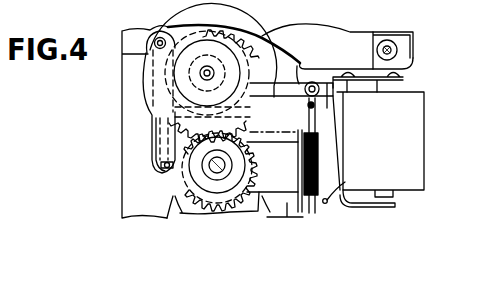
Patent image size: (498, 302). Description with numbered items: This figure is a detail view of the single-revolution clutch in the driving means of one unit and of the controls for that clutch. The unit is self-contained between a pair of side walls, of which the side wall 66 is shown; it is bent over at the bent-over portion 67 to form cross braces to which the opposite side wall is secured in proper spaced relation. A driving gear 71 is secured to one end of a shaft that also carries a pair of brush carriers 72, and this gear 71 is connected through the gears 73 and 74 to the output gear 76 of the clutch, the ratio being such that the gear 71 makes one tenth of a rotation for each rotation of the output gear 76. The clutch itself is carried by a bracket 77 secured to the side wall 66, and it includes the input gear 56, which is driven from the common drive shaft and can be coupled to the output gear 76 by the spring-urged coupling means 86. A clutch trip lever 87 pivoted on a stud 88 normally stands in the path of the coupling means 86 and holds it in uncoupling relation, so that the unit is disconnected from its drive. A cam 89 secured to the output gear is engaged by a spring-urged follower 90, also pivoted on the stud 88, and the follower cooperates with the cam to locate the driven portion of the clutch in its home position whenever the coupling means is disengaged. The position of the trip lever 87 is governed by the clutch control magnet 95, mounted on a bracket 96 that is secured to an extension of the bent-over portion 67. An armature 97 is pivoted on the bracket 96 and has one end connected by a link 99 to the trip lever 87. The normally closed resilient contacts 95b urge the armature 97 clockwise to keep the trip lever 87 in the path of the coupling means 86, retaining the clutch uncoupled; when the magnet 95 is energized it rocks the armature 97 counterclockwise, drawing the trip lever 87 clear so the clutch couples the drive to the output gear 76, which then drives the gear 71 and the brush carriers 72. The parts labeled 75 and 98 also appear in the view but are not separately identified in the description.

The input gear 56 is at (213, 212).
The side wall 66 is at (398, 31).
The bent-over portion 67 is at (408, 50).
The driving gear 71 is at (358, 31).
The brush carriers 72 is at (308, 29).
The gear 73 is at (264, 31).
The gear 74 is at (167, 28).
The gear shaft 75 is at (213, 74).
The output gear 76 is at (253, 167).
The bracket 77 is at (266, 210).
The spring-urged coupling means 86 is at (160, 165).
The clutch trip lever 87 is at (152, 128).
The stud 88 is at (157, 32).
The cam 89 is at (170, 210).
The spring-urged follower 90 is at (161, 173).
The clutch control magnet 95 is at (426, 130).
The resilient contacts 95b is at (320, 211).
The bracket 96 is at (404, 78).
The armature 97 is at (383, 208).
The spring hook 98 is at (345, 186).
The link 99 is at (288, 88).